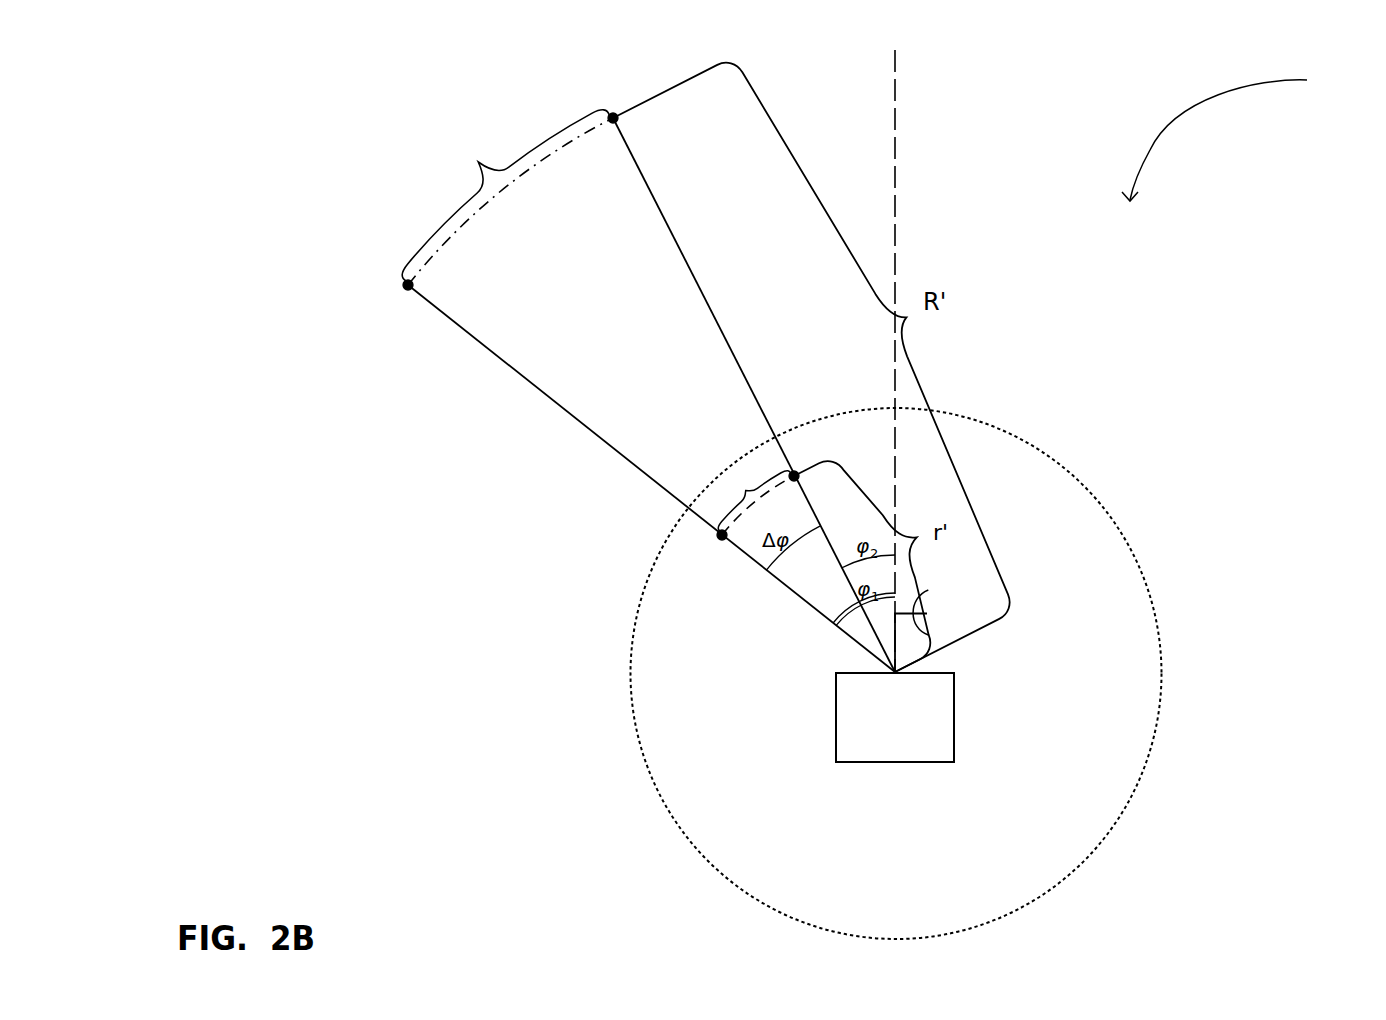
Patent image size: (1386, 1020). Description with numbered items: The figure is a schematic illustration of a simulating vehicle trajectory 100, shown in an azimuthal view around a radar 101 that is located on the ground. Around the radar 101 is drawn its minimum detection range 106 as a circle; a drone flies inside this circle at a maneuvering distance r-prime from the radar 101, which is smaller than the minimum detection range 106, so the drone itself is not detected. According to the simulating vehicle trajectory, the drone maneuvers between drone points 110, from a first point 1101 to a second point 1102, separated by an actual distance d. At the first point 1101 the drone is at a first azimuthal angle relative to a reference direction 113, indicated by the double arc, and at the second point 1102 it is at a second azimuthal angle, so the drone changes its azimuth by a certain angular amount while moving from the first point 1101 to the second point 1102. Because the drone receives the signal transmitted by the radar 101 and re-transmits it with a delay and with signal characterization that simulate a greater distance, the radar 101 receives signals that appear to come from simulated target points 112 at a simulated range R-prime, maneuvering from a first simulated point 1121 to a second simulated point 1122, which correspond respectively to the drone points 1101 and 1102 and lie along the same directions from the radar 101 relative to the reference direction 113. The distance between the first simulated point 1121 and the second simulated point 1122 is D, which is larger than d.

The simulating vehicle trajectory 100 is at (1239, 133).
The radar 101 is at (835, 720).
The minimum detection range 106 is at (636, 635).
The drone maneuvering points 110 is at (780, 531).
The first drone point 1101 is at (722, 541).
The second drone point 1102 is at (800, 478).
The simulated target points 112 is at (548, 228).
The first simulated target point 1121 is at (621, 118).
The second simulated target point 1122 is at (407, 292).
The reference direction 113 is at (893, 221).